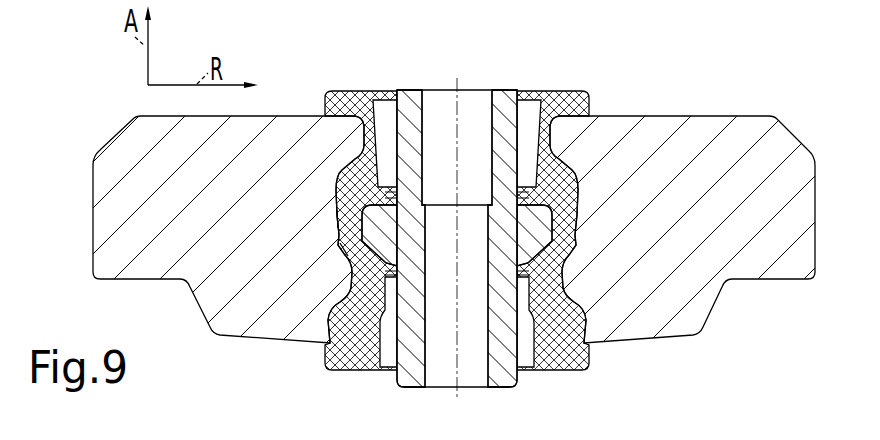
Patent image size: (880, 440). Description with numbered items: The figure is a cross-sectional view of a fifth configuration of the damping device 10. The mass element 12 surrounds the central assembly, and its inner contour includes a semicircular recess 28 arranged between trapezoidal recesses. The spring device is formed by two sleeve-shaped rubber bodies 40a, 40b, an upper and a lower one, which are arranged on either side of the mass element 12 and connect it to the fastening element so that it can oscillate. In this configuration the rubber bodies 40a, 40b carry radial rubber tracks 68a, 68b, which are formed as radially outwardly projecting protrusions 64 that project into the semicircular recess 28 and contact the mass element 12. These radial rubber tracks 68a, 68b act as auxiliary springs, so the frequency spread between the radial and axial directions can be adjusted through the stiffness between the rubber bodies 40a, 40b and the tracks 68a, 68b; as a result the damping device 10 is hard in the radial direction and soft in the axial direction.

The damping device 10 is at (639, 91).
The mass element 12 is at (745, 126).
The semicircular recess 28 is at (338, 225).
The rubber body 40a is at (540, 117).
The rubber body 40b is at (548, 317).
The protrusion 64 is at (338, 217).
The radial rubber track 68a is at (578, 198).
The radial rubber track 68b is at (550, 239).